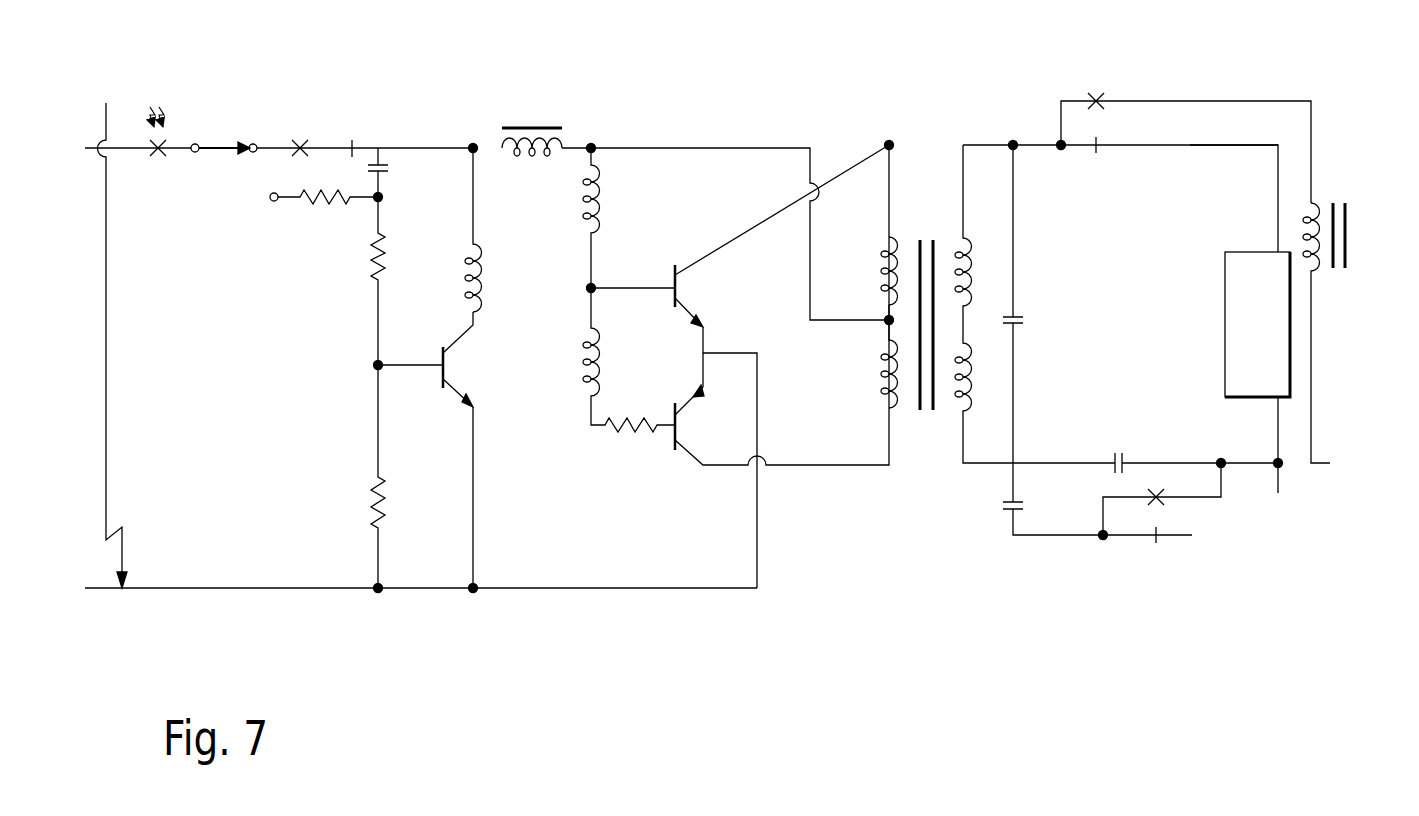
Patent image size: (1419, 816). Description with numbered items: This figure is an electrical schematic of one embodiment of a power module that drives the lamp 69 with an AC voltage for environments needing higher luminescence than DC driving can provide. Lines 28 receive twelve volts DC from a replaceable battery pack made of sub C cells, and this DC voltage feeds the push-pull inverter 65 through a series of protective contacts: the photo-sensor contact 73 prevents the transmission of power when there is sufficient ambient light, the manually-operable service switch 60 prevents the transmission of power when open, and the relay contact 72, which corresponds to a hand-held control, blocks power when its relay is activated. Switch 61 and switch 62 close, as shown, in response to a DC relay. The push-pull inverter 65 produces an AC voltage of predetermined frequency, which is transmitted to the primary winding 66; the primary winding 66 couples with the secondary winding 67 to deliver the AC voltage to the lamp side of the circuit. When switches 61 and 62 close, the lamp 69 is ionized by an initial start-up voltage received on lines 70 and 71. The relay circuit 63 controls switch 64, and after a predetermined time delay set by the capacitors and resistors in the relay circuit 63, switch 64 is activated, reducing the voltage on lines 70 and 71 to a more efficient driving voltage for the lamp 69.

The lines 28 is at (124, 126).
The photo-sensor contact 73 is at (166, 152).
The manually-operable service switch 60 is at (212, 147).
The relay contact 72 is at (299, 138).
The switch 61 is at (356, 147).
The relay circuit 63 is at (473, 137).
The push-pull inverter 65 is at (756, 134).
The primary winding 66 is at (887, 134).
The secondary winding 67 is at (961, 136).
The switch 62 is at (1061, 127).
The line 70 is at (1202, 146).
The lamp 69 is at (1224, 349).
The line 71 is at (1220, 492).
The switch 64 is at (1152, 538).